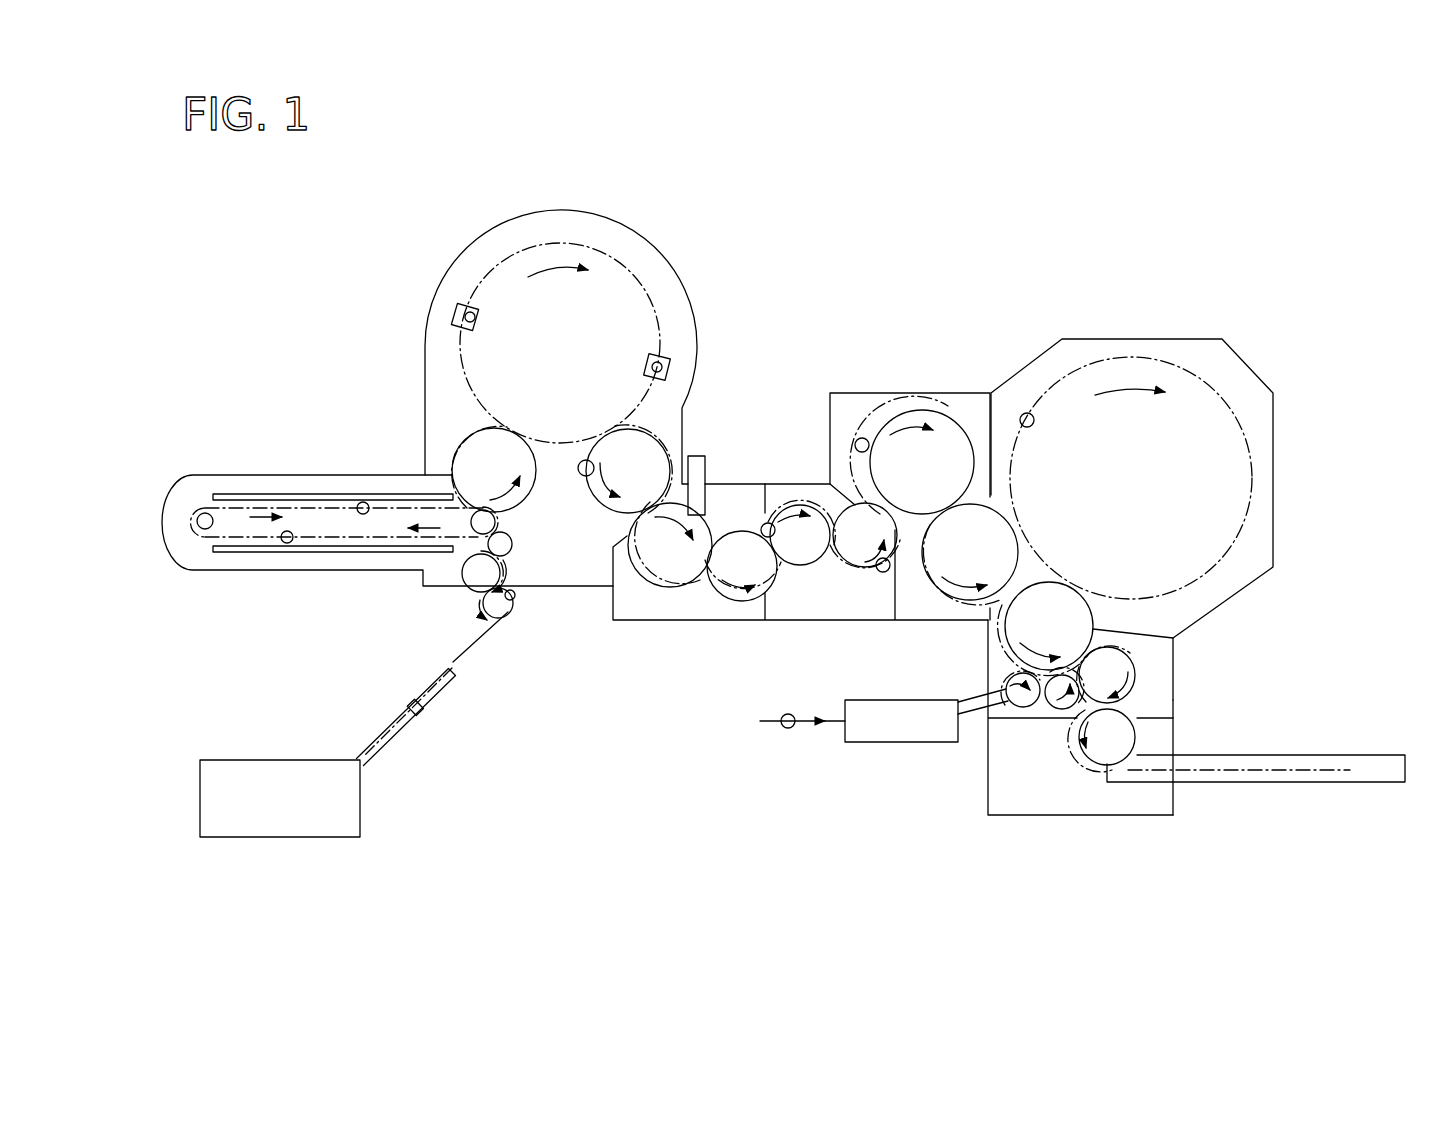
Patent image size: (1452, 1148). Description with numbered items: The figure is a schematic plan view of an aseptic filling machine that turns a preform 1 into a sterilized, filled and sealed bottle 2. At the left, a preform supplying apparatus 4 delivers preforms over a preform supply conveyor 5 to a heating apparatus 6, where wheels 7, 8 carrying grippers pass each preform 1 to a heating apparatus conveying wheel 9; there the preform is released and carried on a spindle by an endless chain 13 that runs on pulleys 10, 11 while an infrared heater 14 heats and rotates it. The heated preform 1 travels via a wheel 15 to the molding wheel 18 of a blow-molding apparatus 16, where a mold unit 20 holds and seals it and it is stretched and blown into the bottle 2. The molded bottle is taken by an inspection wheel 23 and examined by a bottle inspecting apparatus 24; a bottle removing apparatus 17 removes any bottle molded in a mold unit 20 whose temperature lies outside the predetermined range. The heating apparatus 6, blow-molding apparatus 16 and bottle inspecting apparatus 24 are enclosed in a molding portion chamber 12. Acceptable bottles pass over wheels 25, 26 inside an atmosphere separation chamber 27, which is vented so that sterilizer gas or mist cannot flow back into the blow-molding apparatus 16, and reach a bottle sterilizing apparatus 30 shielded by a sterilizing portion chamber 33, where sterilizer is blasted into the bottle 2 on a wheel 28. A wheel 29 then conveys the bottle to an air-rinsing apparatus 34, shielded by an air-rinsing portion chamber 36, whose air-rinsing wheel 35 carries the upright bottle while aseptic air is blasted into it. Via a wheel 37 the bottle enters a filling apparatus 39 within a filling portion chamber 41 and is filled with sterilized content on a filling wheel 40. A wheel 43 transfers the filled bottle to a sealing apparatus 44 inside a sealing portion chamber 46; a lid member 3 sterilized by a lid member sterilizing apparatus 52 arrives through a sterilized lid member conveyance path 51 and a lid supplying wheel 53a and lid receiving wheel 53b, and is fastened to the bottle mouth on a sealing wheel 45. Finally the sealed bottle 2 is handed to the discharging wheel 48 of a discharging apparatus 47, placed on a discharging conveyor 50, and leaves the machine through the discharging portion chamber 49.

The preform 1 is at (452, 315).
The bottle 2 is at (668, 370).
The lid member 3 is at (788, 728).
The preform supplying apparatus 4 is at (290, 838).
The preform supply conveyor 5 is at (448, 685).
The heating apparatus 6 is at (268, 490).
The wheel 7 is at (515, 607).
The wheel 8 is at (463, 578).
The heating apparatus conveying wheel 9 is at (512, 540).
The pulley 10 is at (470, 515).
The pulley 11 is at (197, 545).
The molding portion chamber 12 is at (590, 210).
The endless chain 13 is at (288, 520).
The infrared heater 14 is at (213, 494).
The wheel 15 is at (470, 428).
The blow-molding apparatus 16 is at (553, 218).
The bottle removing apparatus 17 is at (706, 478).
The molding wheel 18 is at (622, 258).
The mold unit 20 is at (455, 305).
The inspection wheel 23 is at (650, 430).
The bottle inspecting apparatus 24 is at (578, 470).
The wheel 25 is at (657, 580).
The wheel 26 is at (765, 523).
The atmosphere separation chamber 27 is at (715, 620).
The wheel 28 is at (805, 565).
The wheel 29 is at (865, 570).
The bottle sterilizing apparatus 30 is at (790, 597).
The sterilizing portion chamber 33 is at (795, 482).
The air-rinsing apparatus 34 is at (889, 407).
The air-rinsing wheel 35 is at (944, 408).
The air-rinsing portion chamber 36 is at (848, 392).
The wheel 37 is at (945, 601).
The filling apparatus 39 is at (1113, 352).
The filling wheel 40 is at (1072, 373).
The filling portion chamber 41 is at (1197, 339).
The wheel 43 is at (1093, 613).
The sealing apparatus 44 is at (1142, 673).
The sealing wheel 45 is at (1128, 705).
The sealing portion chamber 46 is at (1175, 657).
The discharging apparatus 47 is at (1052, 803).
The discharging wheel 48 is at (1137, 740).
The discharging portion chamber 49 is at (1125, 818).
The discharging conveyor 50 is at (1345, 785).
The sterilized lid member conveyance path 51 is at (975, 718).
The lid member sterilizing apparatus 52 is at (893, 746).
The lid supplying wheel 53a is at (1005, 708).
The lid receiving wheel 53b is at (1040, 710).